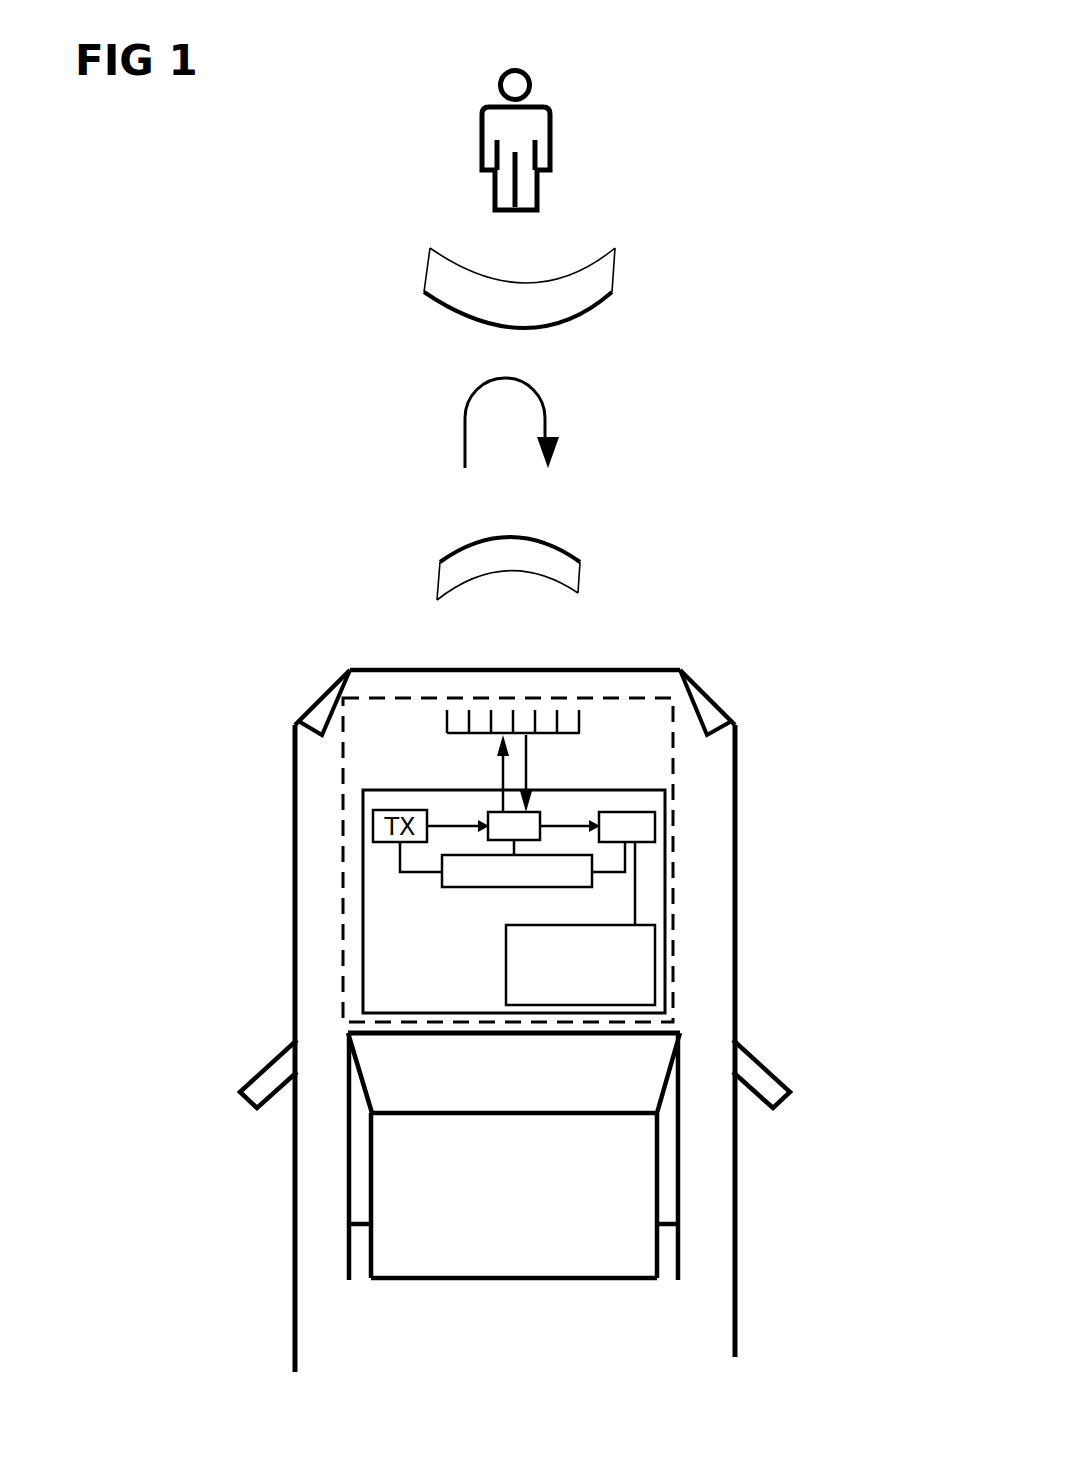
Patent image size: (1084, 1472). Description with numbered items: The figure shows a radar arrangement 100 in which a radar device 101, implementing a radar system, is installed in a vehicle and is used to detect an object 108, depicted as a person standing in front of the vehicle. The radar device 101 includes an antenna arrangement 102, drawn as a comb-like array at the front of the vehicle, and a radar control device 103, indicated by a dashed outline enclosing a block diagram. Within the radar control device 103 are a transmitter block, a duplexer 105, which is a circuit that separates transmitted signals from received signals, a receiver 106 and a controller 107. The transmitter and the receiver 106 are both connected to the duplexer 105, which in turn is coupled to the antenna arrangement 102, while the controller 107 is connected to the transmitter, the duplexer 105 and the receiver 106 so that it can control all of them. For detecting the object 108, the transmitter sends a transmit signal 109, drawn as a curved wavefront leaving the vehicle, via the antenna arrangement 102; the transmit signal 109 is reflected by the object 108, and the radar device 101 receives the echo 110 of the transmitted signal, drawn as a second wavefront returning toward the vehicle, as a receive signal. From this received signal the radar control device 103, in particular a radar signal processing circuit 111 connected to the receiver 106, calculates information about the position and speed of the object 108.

The radar arrangement 100 is at (842, 76).
The radar device 101 is at (673, 747).
The antenna arrangement 102 is at (447, 713).
The radar control device 103 is at (668, 823).
The duplexer 105 is at (488, 815).
The receiver 106 is at (628, 812).
The controller 107 is at (442, 878).
The object 108 is at (517, 69).
The transmit signal 109 is at (562, 547).
The echo 110 is at (606, 245).
The radar signal processing circuit 111 is at (655, 958).